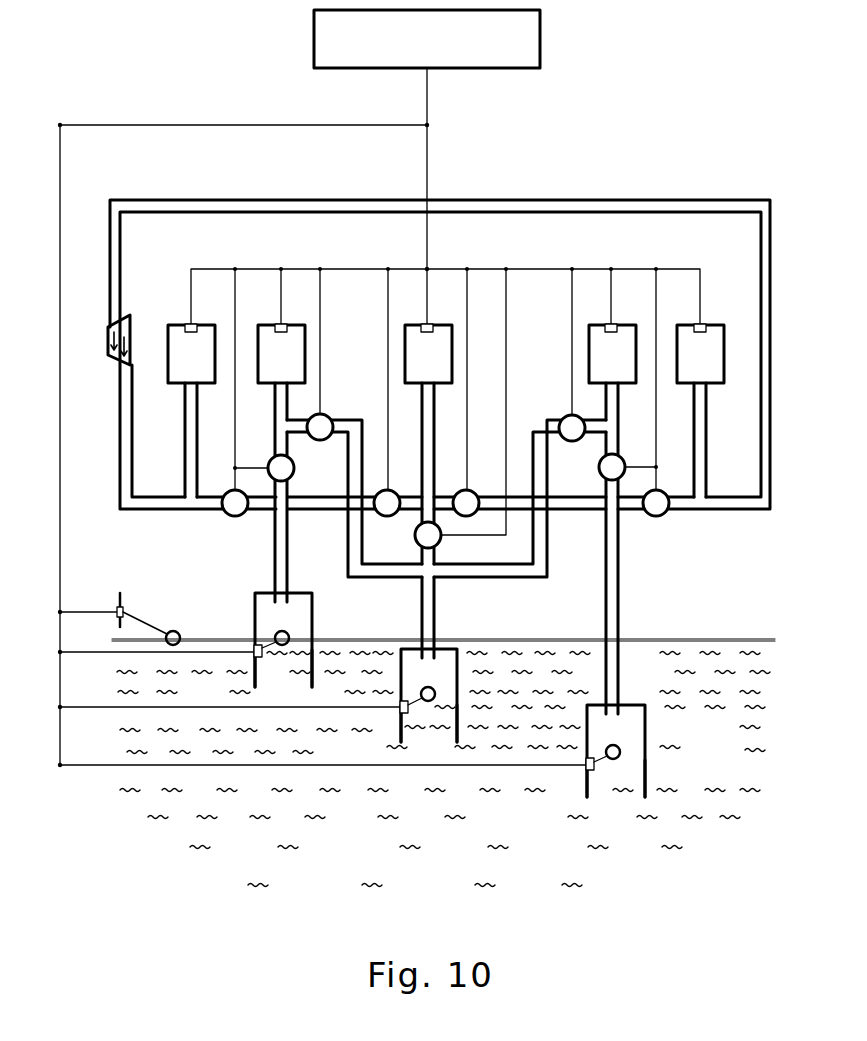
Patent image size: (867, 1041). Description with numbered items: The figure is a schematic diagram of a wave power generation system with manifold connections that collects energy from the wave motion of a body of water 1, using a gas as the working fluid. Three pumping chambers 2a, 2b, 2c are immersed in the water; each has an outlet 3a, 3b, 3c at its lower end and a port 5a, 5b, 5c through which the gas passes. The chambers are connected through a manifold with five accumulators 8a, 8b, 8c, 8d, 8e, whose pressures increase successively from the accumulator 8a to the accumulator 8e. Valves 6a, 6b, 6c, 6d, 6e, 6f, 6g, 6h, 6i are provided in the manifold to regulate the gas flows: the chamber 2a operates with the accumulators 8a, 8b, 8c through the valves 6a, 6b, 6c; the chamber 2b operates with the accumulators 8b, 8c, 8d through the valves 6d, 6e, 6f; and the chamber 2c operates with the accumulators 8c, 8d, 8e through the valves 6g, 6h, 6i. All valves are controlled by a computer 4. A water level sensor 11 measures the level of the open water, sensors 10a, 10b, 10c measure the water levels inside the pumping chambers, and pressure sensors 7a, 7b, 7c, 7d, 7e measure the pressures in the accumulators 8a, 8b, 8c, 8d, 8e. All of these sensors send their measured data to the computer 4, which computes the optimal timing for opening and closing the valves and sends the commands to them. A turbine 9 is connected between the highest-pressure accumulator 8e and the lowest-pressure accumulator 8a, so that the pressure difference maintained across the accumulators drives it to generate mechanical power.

The body of water 1 is at (443, 763).
The pumping chamber 2a is at (283, 640).
The pumping chamber 2b is at (429, 695).
The pumping chamber 2c is at (616, 751).
The outlet 3a is at (283, 674).
The outlet 3b is at (429, 730).
The outlet 3c is at (616, 786).
The computer 4 is at (427, 39).
The port 5a is at (274, 590).
The port 5b is at (422, 626).
The port 5c is at (606, 700).
The valve 6a is at (227, 516).
The valve 6b is at (294, 476).
The valve 6c is at (384, 514).
The valve 6d is at (325, 441).
The valve 6e is at (417, 543).
The valve 6f is at (571, 442).
The valve 6g is at (474, 490).
The valve 6h is at (599, 473).
The valve 6i is at (664, 516).
The pressure sensor 7a is at (186, 322).
The pressure sensor 7b is at (279, 322).
The pressure sensor 7c is at (424, 322).
The pressure sensor 7d is at (610, 322).
The pressure sensor 7e is at (698, 322).
The accumulator 8a is at (191, 354).
The accumulator 8b is at (281, 354).
The accumulator 8c is at (428, 354).
The accumulator 8d is at (612, 354).
The accumulator 8e is at (700, 354).
The turbine 9 is at (107, 349).
The sensor 10a is at (256, 656).
The sensor 10b is at (402, 712).
The sensor 10c is at (588, 769).
The water level sensor 11 is at (125, 607).